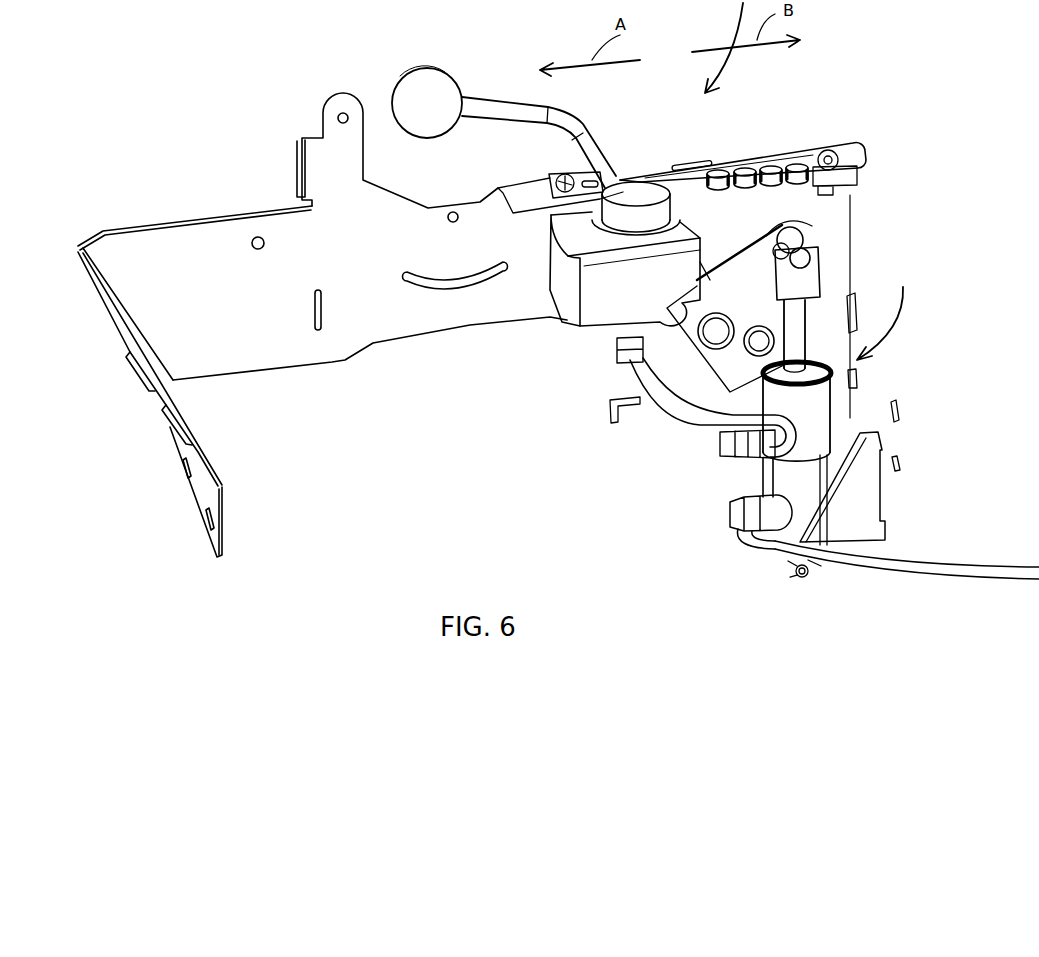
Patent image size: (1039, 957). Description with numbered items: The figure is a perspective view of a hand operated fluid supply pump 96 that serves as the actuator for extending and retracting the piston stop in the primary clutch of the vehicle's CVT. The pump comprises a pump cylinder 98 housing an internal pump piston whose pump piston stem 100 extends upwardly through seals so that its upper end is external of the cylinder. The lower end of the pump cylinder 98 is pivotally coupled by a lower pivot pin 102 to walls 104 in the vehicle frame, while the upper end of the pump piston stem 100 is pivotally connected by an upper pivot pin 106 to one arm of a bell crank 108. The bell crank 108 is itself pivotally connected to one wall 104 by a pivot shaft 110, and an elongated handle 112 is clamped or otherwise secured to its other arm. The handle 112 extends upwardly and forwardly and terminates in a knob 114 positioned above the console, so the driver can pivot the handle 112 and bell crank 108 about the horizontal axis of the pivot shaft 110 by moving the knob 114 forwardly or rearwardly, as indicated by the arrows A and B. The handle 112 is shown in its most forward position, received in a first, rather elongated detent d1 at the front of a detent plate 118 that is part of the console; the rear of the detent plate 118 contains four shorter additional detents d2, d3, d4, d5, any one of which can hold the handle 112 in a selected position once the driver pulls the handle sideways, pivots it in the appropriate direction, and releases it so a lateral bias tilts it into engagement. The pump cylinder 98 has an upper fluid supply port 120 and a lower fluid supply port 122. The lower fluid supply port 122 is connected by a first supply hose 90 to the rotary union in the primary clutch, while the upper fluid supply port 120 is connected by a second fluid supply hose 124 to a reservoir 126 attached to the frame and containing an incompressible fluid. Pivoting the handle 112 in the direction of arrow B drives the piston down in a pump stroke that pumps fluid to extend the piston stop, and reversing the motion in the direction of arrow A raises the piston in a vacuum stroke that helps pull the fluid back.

The first supply hose 90 is at (933, 563).
The fluid supply pump 96 is at (891, 305).
The pump cylinder 98 is at (817, 415).
The pump piston stem 100 is at (800, 307).
The lower pivot pin 102 is at (805, 573).
The walls 104 is at (830, 223).
The upper pivot pin 106 is at (803, 257).
The bell crank 108 is at (738, 277).
The pivot shaft 110 is at (750, 337).
The handle 112 is at (603, 152).
The knob 114 is at (437, 86).
The detent plate 118 is at (770, 157).
The upper fluid supply port 120 is at (770, 410).
The lower fluid supply port 122 is at (762, 508).
The second fluid supply hose 124 is at (690, 413).
The reservoir 126 is at (602, 293).
The first detent d1 is at (640, 180).
The additional detent d2 is at (801, 162).
The additional detent d3 is at (774, 165).
The additional detent d4 is at (746, 167).
The additional detent d5 is at (718, 168).